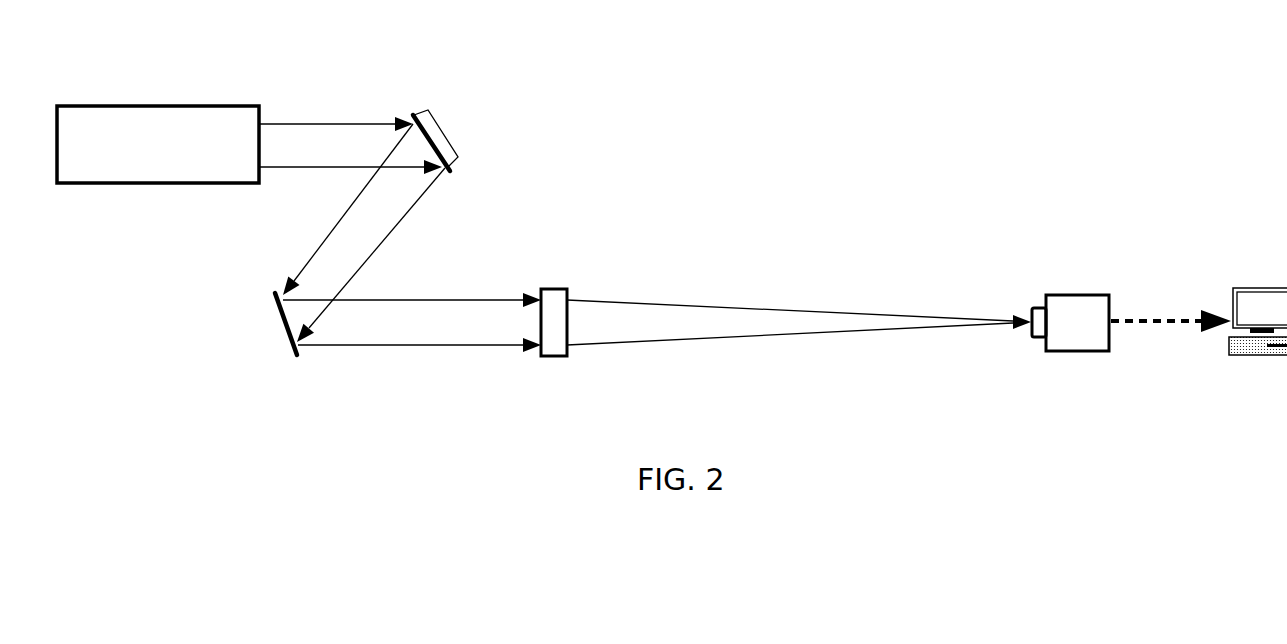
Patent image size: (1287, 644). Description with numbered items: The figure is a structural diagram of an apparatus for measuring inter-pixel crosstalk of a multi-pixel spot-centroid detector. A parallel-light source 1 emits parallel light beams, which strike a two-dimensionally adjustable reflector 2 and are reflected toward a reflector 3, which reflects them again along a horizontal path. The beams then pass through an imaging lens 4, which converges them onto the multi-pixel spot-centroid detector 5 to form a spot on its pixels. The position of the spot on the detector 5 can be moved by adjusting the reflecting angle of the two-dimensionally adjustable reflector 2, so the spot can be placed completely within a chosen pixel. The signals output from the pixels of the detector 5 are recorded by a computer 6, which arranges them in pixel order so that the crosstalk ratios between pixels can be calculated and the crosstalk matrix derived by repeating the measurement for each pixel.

The parallel-light source 1 is at (147, 106).
The two-dimensionally adjustable reflector 2 is at (422, 112).
The reflector 3 is at (281, 328).
The imaging lens 4 is at (555, 289).
The multi-pixel spot-centroid detector 5 is at (1077, 295).
The computer 6 is at (1262, 288).